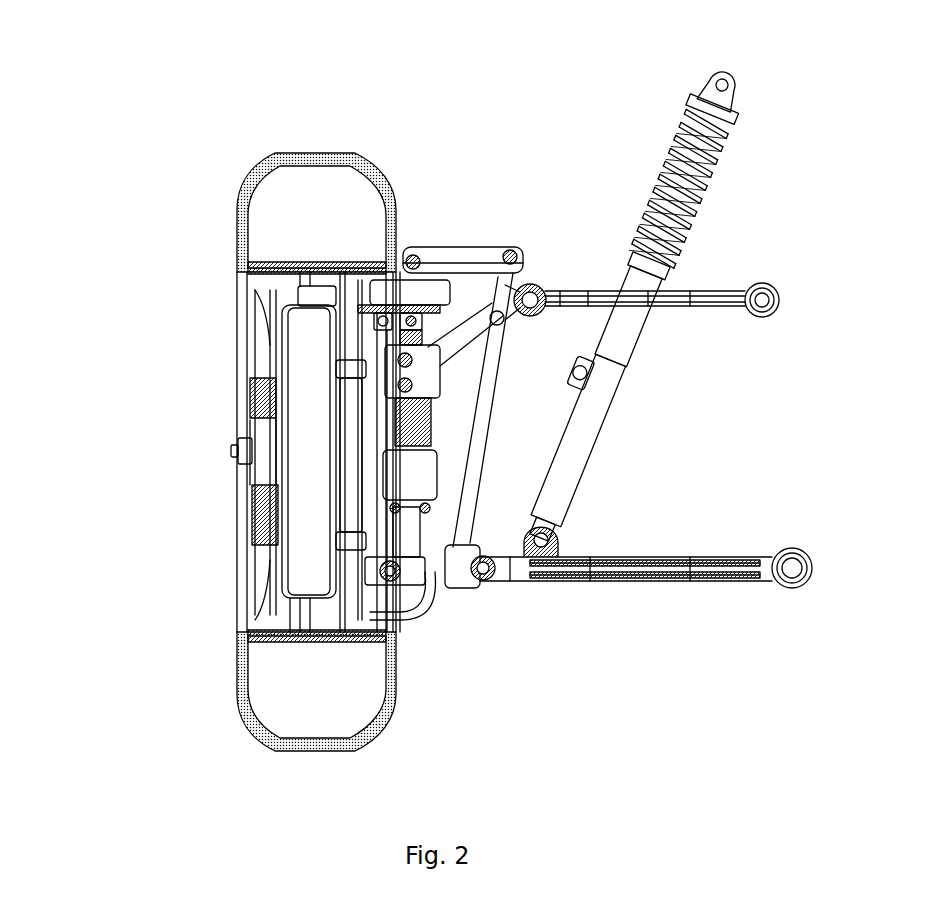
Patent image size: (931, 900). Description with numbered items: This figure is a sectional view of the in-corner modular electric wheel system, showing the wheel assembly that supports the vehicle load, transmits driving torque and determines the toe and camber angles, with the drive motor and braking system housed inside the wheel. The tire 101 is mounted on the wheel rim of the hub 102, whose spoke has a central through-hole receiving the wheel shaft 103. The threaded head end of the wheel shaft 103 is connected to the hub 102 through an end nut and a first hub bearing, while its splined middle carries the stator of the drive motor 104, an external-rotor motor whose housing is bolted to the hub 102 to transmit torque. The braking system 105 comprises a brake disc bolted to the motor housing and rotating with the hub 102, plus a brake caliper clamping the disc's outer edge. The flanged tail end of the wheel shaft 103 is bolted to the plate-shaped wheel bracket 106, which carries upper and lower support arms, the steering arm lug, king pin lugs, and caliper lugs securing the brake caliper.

The tire 101 is at (282, 165).
The hub 102 is at (262, 352).
The wheel shaft 103 is at (237, 452).
The drive motor 104 is at (302, 442).
The braking system 105 is at (350, 510).
The wheel bracket 106 is at (372, 568).